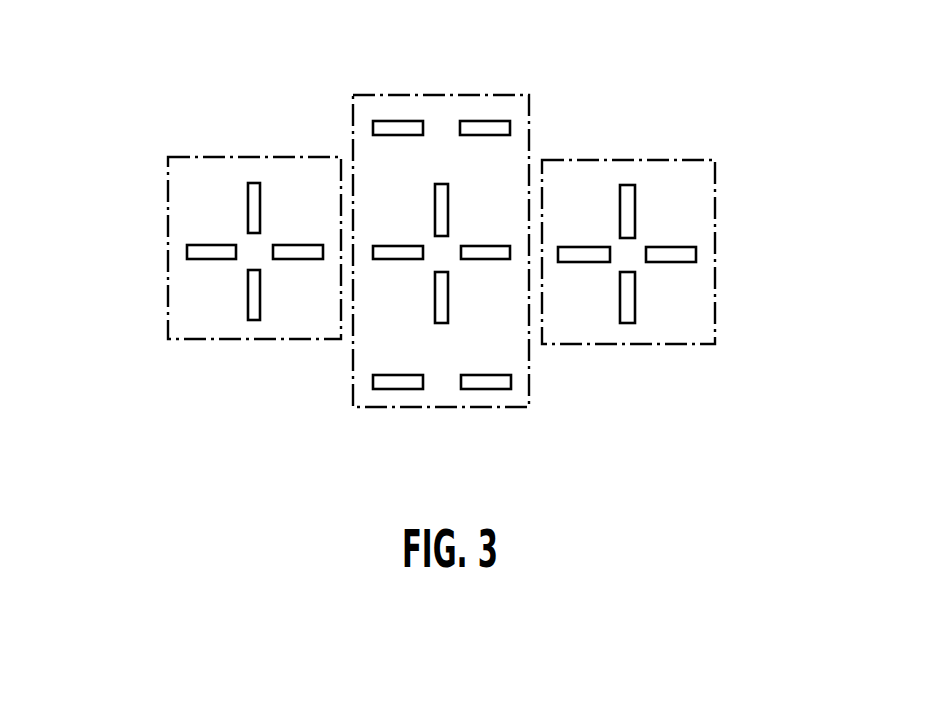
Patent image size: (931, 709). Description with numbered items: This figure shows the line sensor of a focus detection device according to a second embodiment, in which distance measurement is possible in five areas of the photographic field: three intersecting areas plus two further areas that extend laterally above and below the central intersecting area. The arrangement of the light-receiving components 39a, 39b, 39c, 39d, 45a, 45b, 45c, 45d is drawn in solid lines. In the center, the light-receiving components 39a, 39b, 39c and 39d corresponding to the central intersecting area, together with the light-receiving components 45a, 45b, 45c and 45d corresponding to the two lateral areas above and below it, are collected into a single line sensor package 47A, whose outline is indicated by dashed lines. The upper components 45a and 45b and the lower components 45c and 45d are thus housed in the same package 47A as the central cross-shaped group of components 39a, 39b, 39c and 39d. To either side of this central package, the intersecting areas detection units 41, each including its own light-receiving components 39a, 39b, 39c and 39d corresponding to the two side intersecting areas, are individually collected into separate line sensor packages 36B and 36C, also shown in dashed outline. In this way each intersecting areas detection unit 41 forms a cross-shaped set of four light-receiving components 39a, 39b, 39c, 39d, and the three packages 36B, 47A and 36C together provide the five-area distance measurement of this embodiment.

The line sensor package 36B is at (656, 153).
The line sensor package 36C is at (233, 152).
The line sensor package 47A is at (361, 89).
The light-receiving component 39a is at (248, 208).
The light-receiving component 39b is at (248, 305).
The light-receiving component 39c is at (200, 245).
The light-receiving component 39d is at (300, 260).
The intersecting areas detection unit 41 is at (204, 294).
The light-receiving component 45a is at (406, 120).
The light-receiving component 45b is at (500, 120).
The light-receiving component 45c is at (398, 390).
The light-receiving component 45d is at (483, 390).